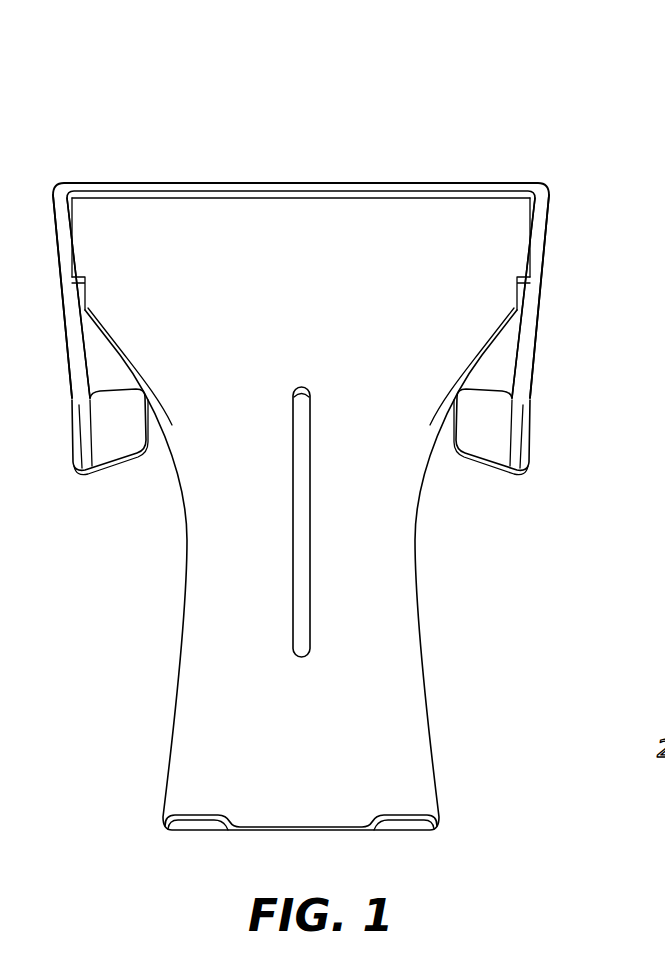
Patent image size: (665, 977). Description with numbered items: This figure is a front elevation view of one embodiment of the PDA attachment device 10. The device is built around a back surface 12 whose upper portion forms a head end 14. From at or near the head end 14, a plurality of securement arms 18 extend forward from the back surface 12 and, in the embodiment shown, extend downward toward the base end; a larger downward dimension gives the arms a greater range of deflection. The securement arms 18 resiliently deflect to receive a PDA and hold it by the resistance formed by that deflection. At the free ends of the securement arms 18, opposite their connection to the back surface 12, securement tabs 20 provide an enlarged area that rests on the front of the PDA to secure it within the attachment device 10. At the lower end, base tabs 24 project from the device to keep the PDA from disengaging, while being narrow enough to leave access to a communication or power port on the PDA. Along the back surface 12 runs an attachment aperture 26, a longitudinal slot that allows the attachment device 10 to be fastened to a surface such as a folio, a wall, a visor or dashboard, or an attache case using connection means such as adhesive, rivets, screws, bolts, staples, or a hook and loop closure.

The PDA attachment device 10 is at (435, 133).
The back surface 12 is at (429, 667).
The head end 14 is at (553, 206).
The securement arms 18 is at (68, 345).
The securement tabs 20 is at (102, 456).
The base tabs 24 is at (199, 831).
The attachment aperture 26 is at (310, 570).